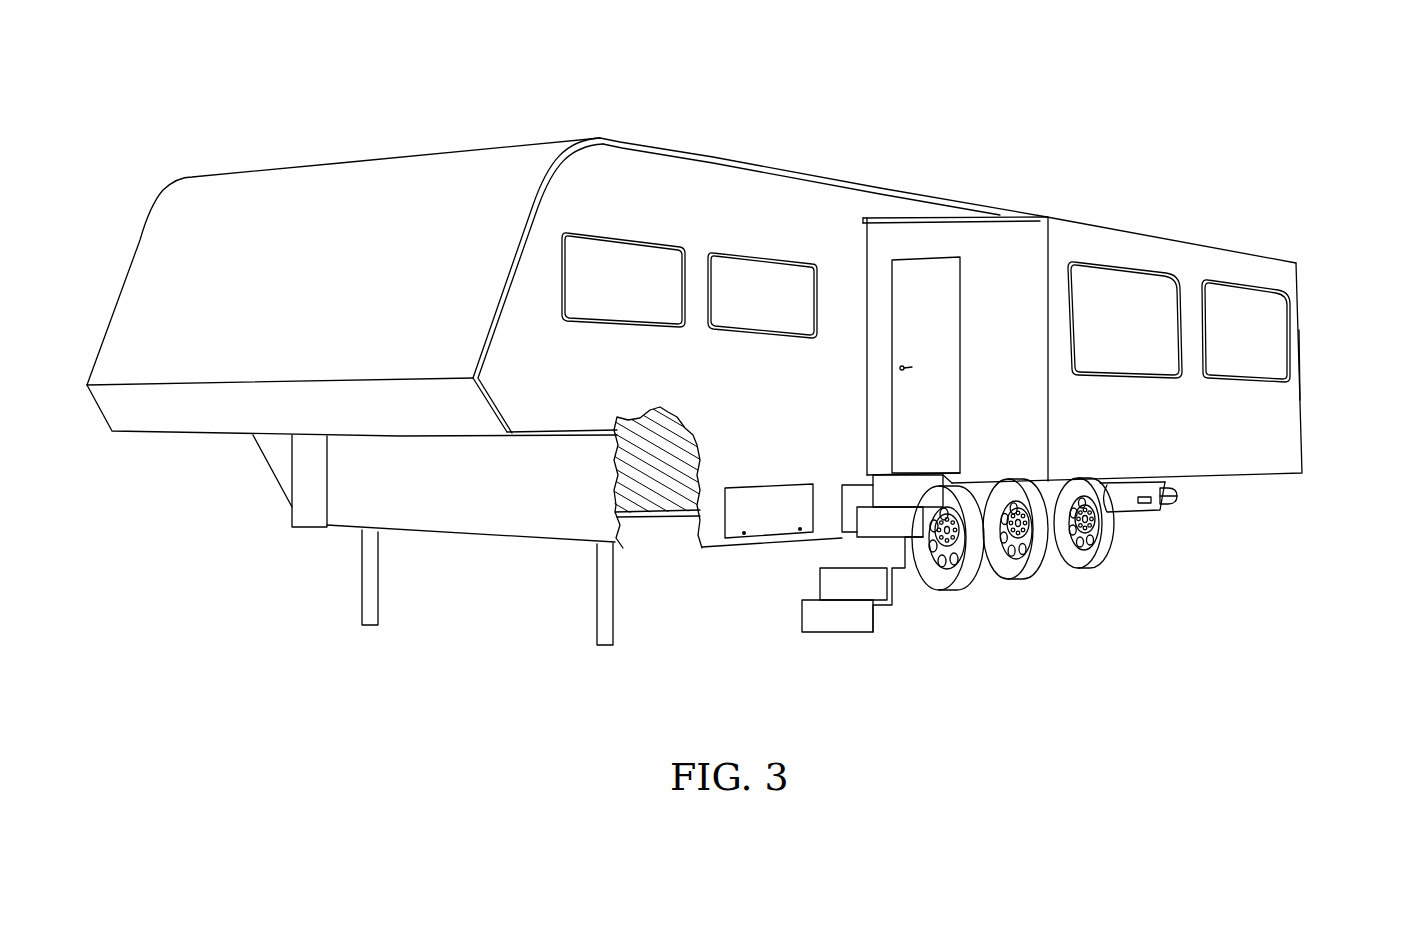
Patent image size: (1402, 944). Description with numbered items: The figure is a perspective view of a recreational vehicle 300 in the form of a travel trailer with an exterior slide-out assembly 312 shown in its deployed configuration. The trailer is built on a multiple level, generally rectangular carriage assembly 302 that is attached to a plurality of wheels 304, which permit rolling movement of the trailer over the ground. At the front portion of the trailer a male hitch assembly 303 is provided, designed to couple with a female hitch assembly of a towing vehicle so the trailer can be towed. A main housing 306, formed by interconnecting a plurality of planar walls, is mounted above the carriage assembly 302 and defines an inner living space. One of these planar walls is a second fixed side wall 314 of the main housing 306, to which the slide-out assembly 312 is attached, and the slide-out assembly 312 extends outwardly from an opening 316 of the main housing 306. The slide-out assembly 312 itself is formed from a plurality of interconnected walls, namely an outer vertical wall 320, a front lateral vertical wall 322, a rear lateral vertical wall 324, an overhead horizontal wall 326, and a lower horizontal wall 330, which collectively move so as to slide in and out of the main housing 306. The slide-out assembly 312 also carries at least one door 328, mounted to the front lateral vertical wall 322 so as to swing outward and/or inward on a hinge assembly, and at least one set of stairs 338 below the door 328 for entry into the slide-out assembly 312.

The recreational vehicle 300 is at (645, 350).
The carriage assembly 302 is at (650, 520).
The male hitch assembly 303 is at (310, 528).
The wheels 304 is at (922, 577).
The main housing 306 is at (690, 152).
The slide-out assembly 312 is at (1160, 321).
The second fixed side wall 314 is at (765, 198).
The opening 316 is at (877, 214).
The outer vertical wall 320 is at (1278, 448).
The front lateral vertical wall 322 is at (983, 306).
The rear lateral vertical wall 324 is at (1309, 321).
The overhead horizontal wall 326 is at (1127, 231).
The door 328 is at (940, 322).
The lower horizontal wall 330 is at (1220, 480).
The set of stairs 338 is at (845, 632).